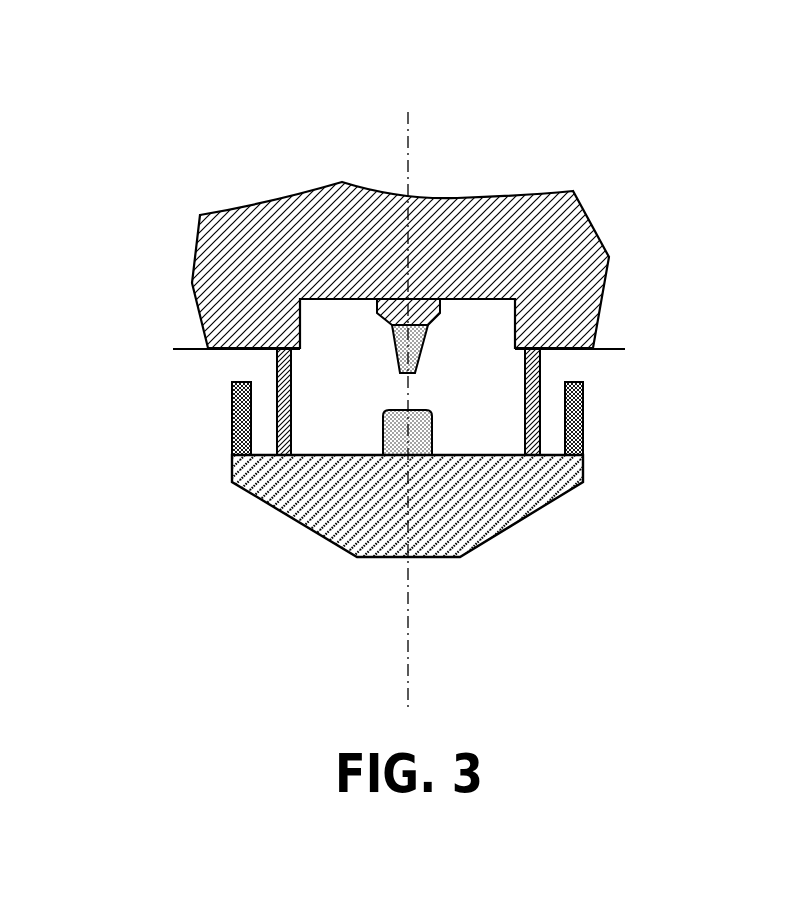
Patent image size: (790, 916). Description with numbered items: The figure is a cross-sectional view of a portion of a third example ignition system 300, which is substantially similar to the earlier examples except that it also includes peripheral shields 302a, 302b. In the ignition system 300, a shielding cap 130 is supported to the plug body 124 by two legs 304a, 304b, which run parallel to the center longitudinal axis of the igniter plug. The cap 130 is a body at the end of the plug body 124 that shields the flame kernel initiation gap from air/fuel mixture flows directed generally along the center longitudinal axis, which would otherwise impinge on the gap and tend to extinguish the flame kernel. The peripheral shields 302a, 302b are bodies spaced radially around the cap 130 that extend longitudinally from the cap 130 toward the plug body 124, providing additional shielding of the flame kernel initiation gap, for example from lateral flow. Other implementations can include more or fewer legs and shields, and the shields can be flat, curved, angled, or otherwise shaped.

The ignition system 300 is at (136, 46).
The plug body 124 is at (208, 258).
The shielding cap 130 is at (354, 553).
The peripheral shield 302a is at (233, 427).
The peripheral shield 302b is at (585, 420).
The leg 304a is at (275, 365).
The leg 304b is at (543, 365).